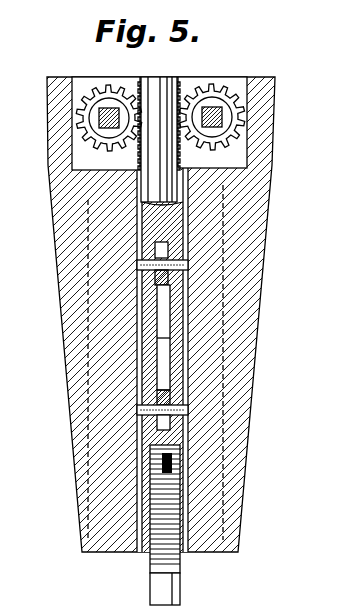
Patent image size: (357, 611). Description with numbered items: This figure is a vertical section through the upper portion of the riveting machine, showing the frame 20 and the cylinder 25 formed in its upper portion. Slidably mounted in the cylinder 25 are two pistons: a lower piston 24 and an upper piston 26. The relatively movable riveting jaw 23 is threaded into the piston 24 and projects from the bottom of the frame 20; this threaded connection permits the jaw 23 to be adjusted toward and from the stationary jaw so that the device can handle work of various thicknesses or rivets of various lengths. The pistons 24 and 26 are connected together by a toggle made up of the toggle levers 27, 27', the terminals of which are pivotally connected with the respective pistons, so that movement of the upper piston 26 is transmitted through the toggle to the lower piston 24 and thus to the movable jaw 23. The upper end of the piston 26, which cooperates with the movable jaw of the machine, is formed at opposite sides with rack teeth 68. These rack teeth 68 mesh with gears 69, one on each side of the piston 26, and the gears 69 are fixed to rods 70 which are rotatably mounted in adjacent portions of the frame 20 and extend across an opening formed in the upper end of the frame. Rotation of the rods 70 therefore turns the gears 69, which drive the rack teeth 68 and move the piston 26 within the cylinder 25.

The frame 20 is at (270, 200).
The movable riveting jaw 23 is at (181, 580).
The piston 24 is at (170, 429).
The cylinder 25 is at (168, 372).
The piston 26 is at (168, 228).
The toggle lever 27 is at (221, 272).
The toggle lever 27' is at (230, 406).
The rack teeth 68 is at (140, 83).
The gears 69 is at (95, 89).
The rods 70 is at (100, 123).